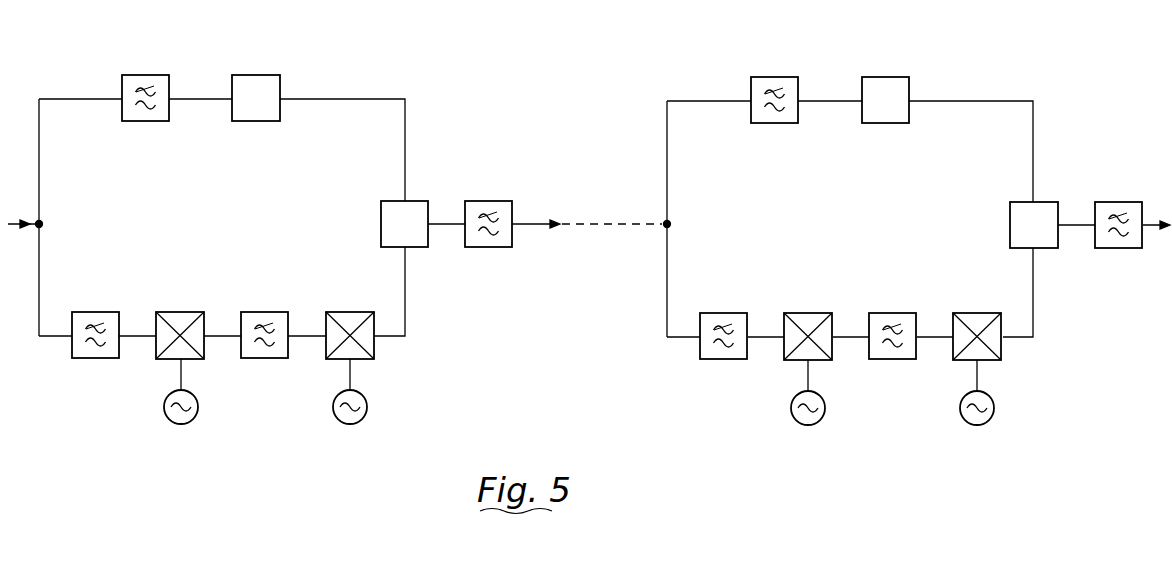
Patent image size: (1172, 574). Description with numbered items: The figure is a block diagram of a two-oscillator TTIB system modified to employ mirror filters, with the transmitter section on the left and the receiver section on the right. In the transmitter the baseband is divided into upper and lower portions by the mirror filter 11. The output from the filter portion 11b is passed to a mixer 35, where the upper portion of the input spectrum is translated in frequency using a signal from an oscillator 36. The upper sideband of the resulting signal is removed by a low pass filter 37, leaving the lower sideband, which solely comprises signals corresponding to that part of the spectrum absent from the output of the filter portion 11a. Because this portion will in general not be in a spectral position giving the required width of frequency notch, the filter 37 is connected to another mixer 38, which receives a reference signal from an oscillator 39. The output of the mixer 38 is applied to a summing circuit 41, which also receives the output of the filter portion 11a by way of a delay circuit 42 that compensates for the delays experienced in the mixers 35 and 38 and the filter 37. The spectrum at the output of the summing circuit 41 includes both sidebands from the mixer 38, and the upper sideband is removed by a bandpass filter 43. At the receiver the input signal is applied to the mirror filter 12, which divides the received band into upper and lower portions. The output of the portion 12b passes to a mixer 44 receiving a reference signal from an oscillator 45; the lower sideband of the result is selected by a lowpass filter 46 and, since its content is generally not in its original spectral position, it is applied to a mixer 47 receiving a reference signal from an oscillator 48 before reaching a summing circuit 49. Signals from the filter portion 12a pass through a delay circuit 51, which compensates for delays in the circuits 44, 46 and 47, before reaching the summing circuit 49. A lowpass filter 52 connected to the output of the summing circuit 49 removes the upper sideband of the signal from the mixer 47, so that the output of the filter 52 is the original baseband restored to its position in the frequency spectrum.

The mirror filter 11 is at (151, 235).
The filter portion 11a is at (150, 121).
The filter portion 11b is at (94, 312).
The mirror filter 12 is at (786, 235).
The filter portion 12a is at (779, 123).
The filter portion 12b is at (722, 313).
The mixer 35 is at (178, 312).
The oscillator 36 is at (163, 406).
The low pass filter 37 is at (264, 312).
The mixer 38 is at (346, 312).
The oscillator 39 is at (332, 406).
The summing circuit 41 is at (381, 212).
The delay circuit 42 is at (259, 121).
The bandpass filter 43 is at (492, 201).
The mixer 44 is at (806, 313).
The oscillator 45 is at (790, 407).
The lowpass filter 46 is at (891, 313).
The mixer 47 is at (975, 313).
The oscillator 48 is at (960, 407).
The summing circuit 49 is at (1010, 214).
The delay circuit 51 is at (890, 123).
The lowpass filter 52 is at (1122, 202).